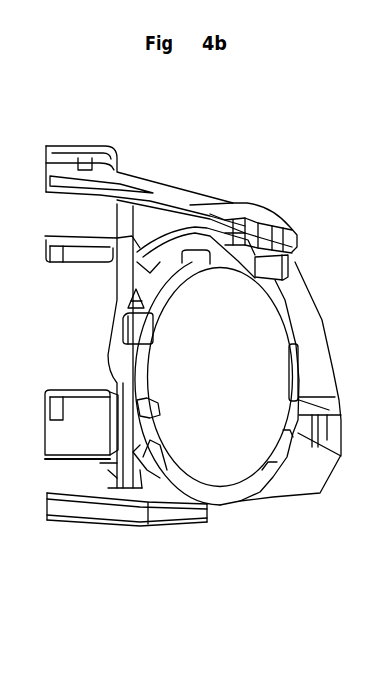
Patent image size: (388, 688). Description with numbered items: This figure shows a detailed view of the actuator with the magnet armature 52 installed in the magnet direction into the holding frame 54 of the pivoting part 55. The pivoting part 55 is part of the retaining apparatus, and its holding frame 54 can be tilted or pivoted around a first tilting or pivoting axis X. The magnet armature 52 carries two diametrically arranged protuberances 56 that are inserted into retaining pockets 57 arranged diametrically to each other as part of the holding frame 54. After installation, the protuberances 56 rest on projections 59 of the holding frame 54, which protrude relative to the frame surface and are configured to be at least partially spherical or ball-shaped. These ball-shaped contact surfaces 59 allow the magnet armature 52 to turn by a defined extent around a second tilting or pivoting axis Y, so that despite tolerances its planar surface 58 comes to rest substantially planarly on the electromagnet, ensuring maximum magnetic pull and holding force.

The magnet armature 52 is at (216, 306).
The planar surface 58 is at (207, 290).
The holding frame 54 is at (298, 310).
The pivoting part 55 is at (249, 216).
The protuberances 56 is at (148, 310).
The retaining pockets 57 is at (134, 333).
The projections 59 is at (160, 413).